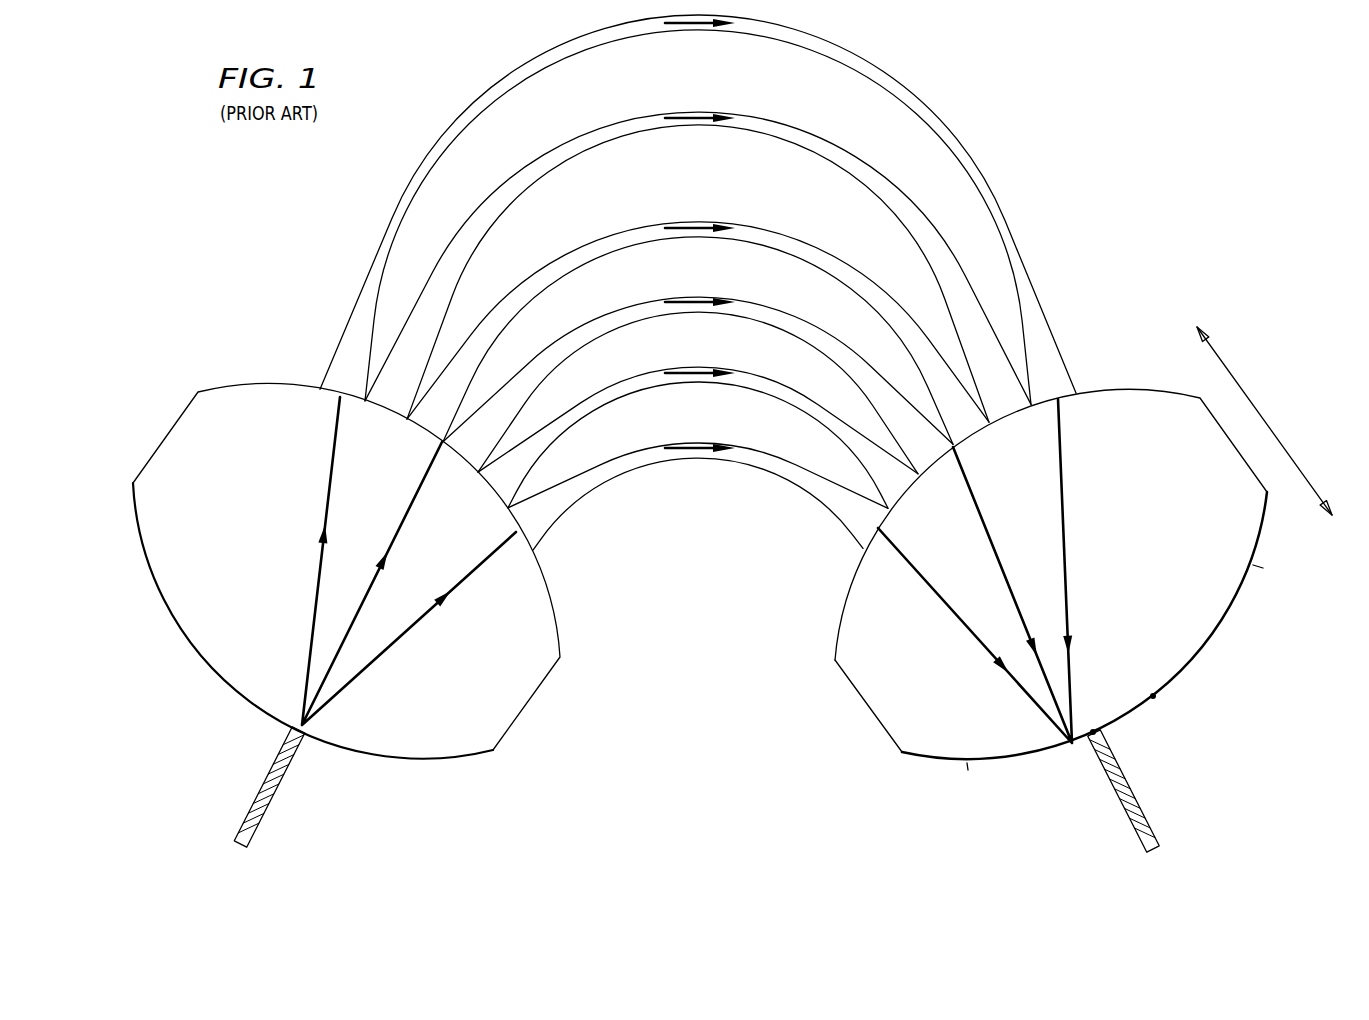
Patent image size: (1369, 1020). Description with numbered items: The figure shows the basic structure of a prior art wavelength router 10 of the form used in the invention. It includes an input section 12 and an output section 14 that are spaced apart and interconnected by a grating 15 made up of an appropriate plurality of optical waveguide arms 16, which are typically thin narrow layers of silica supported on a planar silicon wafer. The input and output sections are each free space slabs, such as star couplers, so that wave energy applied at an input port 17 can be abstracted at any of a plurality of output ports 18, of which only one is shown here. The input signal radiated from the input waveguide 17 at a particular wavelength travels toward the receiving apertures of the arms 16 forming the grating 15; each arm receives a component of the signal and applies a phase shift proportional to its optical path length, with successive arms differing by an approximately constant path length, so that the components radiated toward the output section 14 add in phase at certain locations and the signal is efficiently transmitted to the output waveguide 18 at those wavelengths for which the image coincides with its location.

The wavelength router 10 is at (711, 717).
The input section 12 is at (493, 750).
The output section 14 is at (838, 623).
The grating 15 is at (953, 130).
The optical waveguide arms 16 is at (645, 37).
The input port 17 is at (277, 795).
The output port 18 is at (1130, 803).